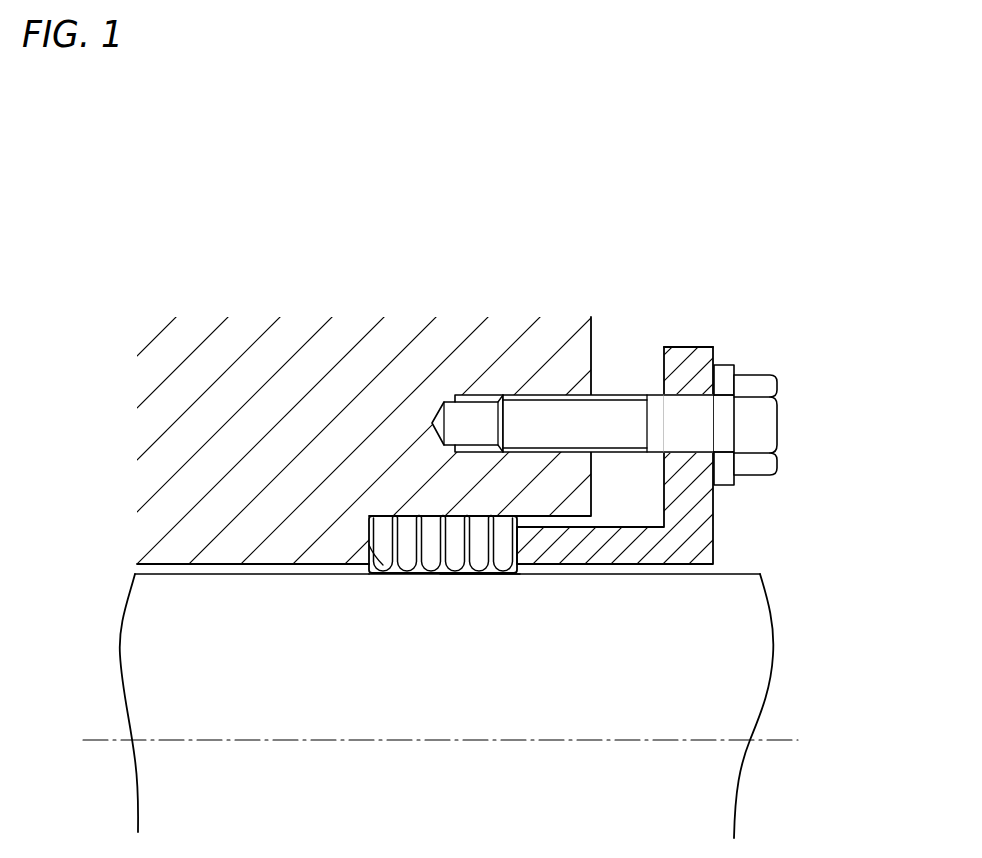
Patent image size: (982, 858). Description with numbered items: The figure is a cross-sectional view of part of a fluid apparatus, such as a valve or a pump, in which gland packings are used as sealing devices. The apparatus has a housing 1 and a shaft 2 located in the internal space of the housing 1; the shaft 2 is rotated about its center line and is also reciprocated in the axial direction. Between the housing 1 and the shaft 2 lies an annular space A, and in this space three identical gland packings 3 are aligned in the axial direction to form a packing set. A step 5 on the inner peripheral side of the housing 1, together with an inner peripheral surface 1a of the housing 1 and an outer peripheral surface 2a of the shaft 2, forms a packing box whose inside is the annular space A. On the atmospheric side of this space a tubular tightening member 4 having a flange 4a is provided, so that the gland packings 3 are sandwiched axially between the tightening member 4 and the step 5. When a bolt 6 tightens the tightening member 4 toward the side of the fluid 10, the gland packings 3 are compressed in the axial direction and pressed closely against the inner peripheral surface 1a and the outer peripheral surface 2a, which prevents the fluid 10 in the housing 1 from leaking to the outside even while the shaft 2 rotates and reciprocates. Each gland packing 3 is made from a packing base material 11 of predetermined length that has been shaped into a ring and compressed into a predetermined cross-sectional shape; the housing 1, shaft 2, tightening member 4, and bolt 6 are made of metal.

The housing 1 is at (176, 445).
The inner peripheral surface 1a is at (428, 517).
The shaft 2 is at (226, 722).
The outer peripheral surface 2a is at (498, 567).
The gland packing 3 is at (480, 567).
The tightening member 4 is at (703, 535).
The flange 4a is at (685, 353).
The step 5 is at (393, 517).
The bolt 6 is at (762, 425).
The fluid 10 is at (150, 567).
The packing base material 11 is at (368, 562).
The annular space A is at (524, 571).